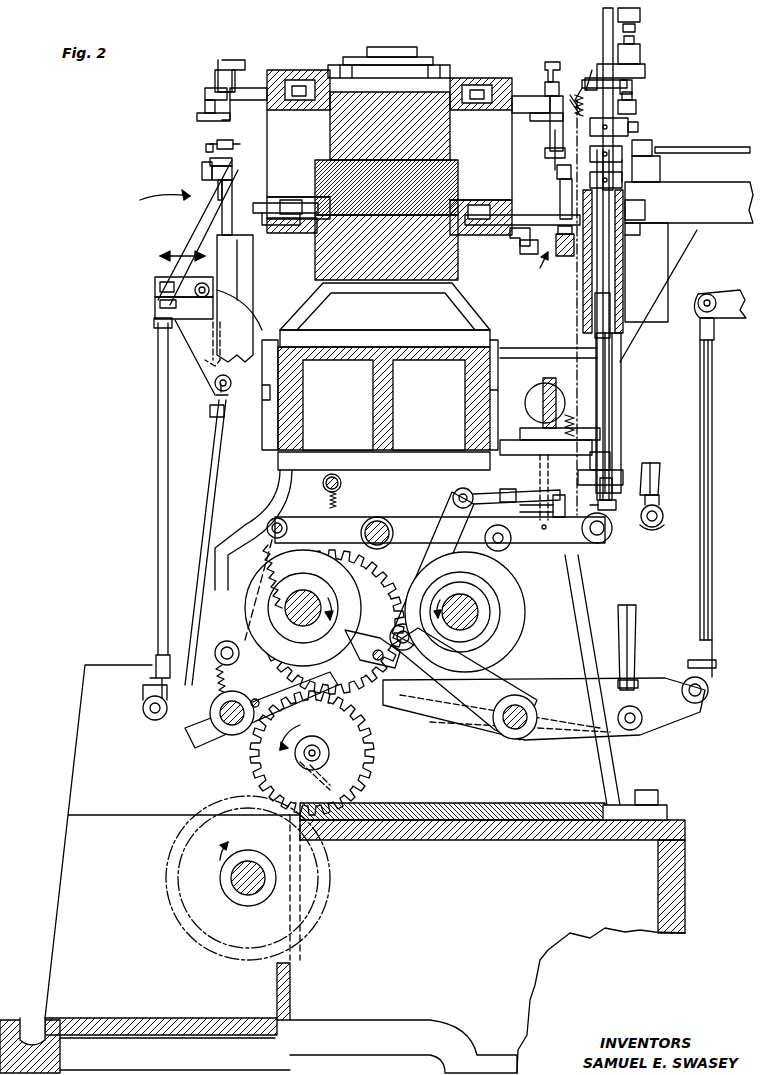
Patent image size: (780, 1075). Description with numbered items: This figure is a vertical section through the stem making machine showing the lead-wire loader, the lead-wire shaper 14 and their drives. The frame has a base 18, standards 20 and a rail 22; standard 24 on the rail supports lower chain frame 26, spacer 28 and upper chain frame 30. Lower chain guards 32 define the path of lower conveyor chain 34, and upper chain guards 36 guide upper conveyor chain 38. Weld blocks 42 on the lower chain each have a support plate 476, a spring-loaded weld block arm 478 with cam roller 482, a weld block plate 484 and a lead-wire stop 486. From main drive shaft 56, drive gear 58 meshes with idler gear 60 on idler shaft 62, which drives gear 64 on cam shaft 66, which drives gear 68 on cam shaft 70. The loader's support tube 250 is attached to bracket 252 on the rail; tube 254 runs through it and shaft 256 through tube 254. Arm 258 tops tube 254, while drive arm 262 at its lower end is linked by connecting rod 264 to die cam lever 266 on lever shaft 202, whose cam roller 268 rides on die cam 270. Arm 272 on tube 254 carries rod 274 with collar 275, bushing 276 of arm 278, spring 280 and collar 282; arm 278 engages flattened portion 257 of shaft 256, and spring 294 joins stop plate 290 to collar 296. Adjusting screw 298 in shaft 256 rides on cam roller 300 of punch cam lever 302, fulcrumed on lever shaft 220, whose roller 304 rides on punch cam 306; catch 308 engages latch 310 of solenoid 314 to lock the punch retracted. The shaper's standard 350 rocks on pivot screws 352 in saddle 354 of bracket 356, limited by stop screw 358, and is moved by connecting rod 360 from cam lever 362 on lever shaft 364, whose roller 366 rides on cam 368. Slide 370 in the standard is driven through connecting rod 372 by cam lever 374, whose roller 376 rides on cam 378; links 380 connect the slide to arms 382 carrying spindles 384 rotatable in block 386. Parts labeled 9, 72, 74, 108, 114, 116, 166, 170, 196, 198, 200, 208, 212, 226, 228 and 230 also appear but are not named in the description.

The pin 9 is at (206, 152).
The lead-wire shaper 14 is at (155, 195).
The base 18 is at (62, 878).
The standards 20 is at (250, 520).
The rail 22 is at (385, 397).
The standard 24 is at (462, 303).
The lower chain frame 26 is at (330, 262).
The spacer 28 is at (448, 184).
The upper chain frame 30 is at (452, 136).
The lower chain guards 32 is at (296, 200).
The lower conveyor chain 34 is at (268, 215).
The upper chain guards 36 is at (332, 72).
The upper conveyor chain 38 is at (298, 70).
The weld blocks 42 is at (539, 267).
The main drive shaft 56 is at (240, 883).
The drive gear 58 is at (328, 850).
The idler gear 60 is at (370, 768).
The idler shaft 62 is at (374, 742).
The gear 64 is at (322, 748).
The cam shaft 66 is at (300, 618).
The gear 68 is at (402, 575).
The cam shaft 70 is at (470, 622).
The support arm 72 is at (724, 190).
The bracket 74 is at (642, 328).
The rod 108 is at (722, 147).
The block 114 is at (660, 163).
The clamp 116 is at (652, 146).
The lever 166 is at (725, 295).
The clevis 170 is at (712, 324).
The connecting rod 196 is at (712, 486).
The rocker arm 198 is at (672, 702).
The pivot 200 is at (708, 675).
The lever shaft 202 is at (515, 740).
The link 208 is at (660, 466).
The clevis 212 is at (662, 516).
The lever shaft 220 is at (382, 516).
The link 226 is at (636, 630).
The arm 228 is at (620, 735).
The pivot 230 is at (636, 700).
The support tube 250 is at (610, 383).
The bracket 252 is at (540, 356).
The tube 254 is at (610, 300).
The shaft 256 is at (605, 268).
The flattened portion 257 is at (603, 22).
The arm 258 is at (630, 178).
The drive arm 262 is at (620, 472).
The connecting rod 264 is at (514, 490).
The die cam lever 266 is at (455, 512).
The cam roller 268 is at (404, 652).
The die cam 270 is at (500, 622).
The arm 272 is at (638, 127).
The rod 274 is at (633, 87).
The collar 275 is at (637, 108).
The bushing 276 is at (640, 54).
The arm 278 is at (645, 70).
The spring 280 is at (635, 28).
The collar 282 is at (640, 14).
The stop plate 290 is at (598, 80).
The spring 294 is at (580, 98).
The collar 296 is at (612, 458).
The adjusting screw 298 is at (616, 506).
The cam roller 300 is at (600, 544).
The punch cam lever 302 is at (416, 516).
The cam roller 304 is at (508, 548).
The punch cam 306 is at (524, 606).
The catch 308 is at (566, 506).
The latch 310 is at (548, 476).
The solenoid 314 is at (545, 384).
The standard 350 is at (196, 216).
The pivot screws 352 is at (180, 258).
The saddle 354 is at (160, 305).
The bracket 356 is at (196, 340).
The stop screw 358 is at (158, 290).
The connecting rod 360 is at (158, 386).
The cam lever 362 is at (147, 720).
The lever shaft 364 is at (230, 728).
The cam roller 366 is at (372, 670).
The cam 368 is at (300, 562).
The slide 370 is at (236, 310).
The connecting rod 372 is at (212, 443).
The cam lever 374 is at (198, 748).
The cam roller 376 is at (227, 641).
The cam 378 is at (258, 610).
The links 380 is at (233, 205).
The arms 382 is at (232, 172).
The spindles 384 is at (203, 172).
The block 386 is at (232, 160).
The weld block support plate 476 is at (520, 244).
The weld block arm 478 is at (566, 256).
The cam roller 482 is at (524, 254).
The weld block plate 484 is at (560, 198).
The lead-wire stop 486 is at (558, 178).